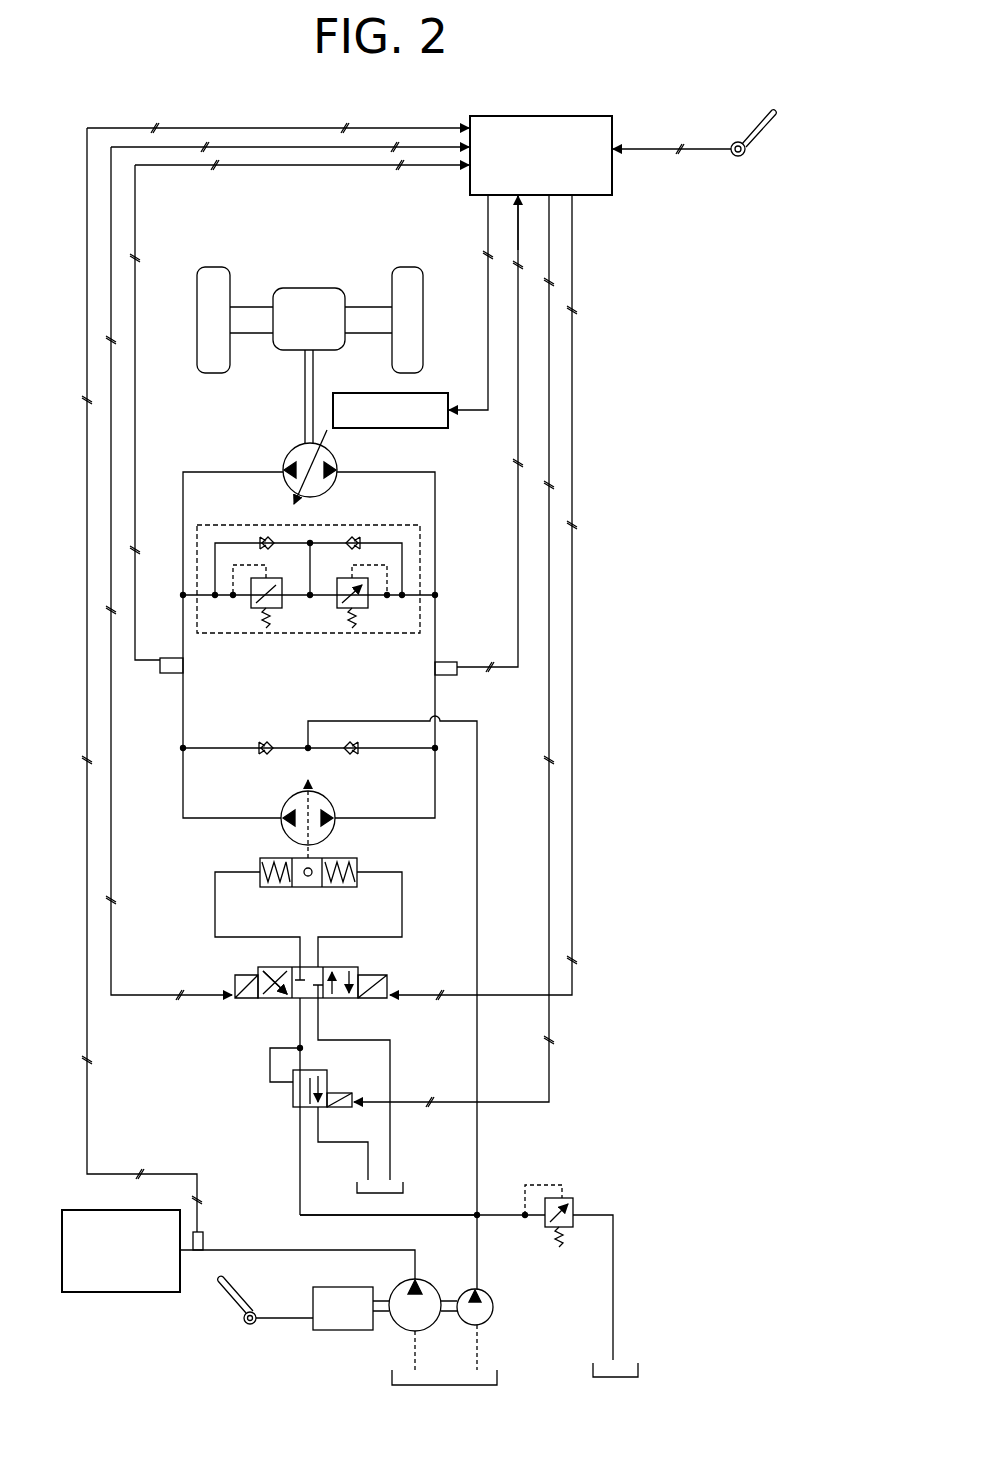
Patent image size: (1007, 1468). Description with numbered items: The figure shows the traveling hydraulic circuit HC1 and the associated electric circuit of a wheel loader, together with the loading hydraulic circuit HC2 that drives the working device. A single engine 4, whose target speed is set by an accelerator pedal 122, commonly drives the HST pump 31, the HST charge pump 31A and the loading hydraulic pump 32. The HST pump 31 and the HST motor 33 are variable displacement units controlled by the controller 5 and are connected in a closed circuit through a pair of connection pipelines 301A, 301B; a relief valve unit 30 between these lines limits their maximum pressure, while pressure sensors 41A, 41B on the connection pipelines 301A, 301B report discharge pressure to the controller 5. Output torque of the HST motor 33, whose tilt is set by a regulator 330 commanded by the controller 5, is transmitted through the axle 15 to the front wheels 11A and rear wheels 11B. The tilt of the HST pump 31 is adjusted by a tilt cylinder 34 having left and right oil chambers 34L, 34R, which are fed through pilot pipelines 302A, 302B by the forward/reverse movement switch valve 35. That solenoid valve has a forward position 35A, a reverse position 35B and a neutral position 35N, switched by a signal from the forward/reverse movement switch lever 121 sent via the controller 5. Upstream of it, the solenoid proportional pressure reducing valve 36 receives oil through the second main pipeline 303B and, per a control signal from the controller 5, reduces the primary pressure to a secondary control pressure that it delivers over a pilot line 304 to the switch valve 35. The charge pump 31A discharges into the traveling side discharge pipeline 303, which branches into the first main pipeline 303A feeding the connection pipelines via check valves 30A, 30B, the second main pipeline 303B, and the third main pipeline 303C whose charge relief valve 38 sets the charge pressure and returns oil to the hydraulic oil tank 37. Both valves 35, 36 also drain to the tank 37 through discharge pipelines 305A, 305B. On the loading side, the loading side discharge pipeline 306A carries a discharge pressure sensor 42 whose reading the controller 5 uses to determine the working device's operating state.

The controller 5 is at (612, 116).
The forward/reverse movement switch lever 121 is at (773, 108).
The front wheels 11A is at (215, 267).
The rear wheels 11B is at (410, 267).
The axle 15 is at (310, 288).
The regulator 330 is at (445, 428).
The HST motor 33 is at (337, 490).
The relief valve unit 30 is at (250, 522).
The connection pipeline 301A is at (183, 560).
The connection pipeline 301B is at (435, 555).
The forward side pressure sensor 41A is at (165, 675).
The forward side pressure sensor 41B is at (455, 675).
The check valve 30A is at (262, 755).
The check valve 30B is at (355, 755).
The HST pump 31 is at (283, 805).
The tilt cylinder 34 is at (318, 887).
The left oil chamber 34L is at (260, 862).
The right oil chamber 34R is at (357, 862).
The pilot pipeline 302A is at (215, 920).
The pilot pipeline 302B is at (402, 920).
The forward/reverse movement switch valve 35 is at (235, 1005).
The forward position 35A is at (345, 968).
The reverse position 35B is at (268, 968).
The neutral position 35N is at (300, 1000).
The pilot line 304 is at (300, 1020).
The solenoid proportional pressure reducing valve 36 is at (293, 1108).
The discharge pipeline 305A is at (390, 1130).
The discharge pipeline 305B is at (335, 1151).
The traveling side discharge pipeline 303 is at (470, 1218).
The first main pipeline 303A is at (475, 1150).
The second main pipeline 303B is at (300, 1160).
The third main pipeline 303C is at (507, 1259).
The hydraulic oil tank 37 is at (403, 1185).
The charge relief valve 38 is at (573, 1205).
The loading hydraulic pump 32 is at (437, 1288).
The HST charge pump 31A is at (494, 1305).
The engine 4 is at (325, 1330).
The accelerator pedal 122 is at (220, 1310).
The discharge pressure sensor 42 is at (203, 1235).
The loading side discharge pipeline 306A is at (262, 1250).
The traveling hydraulic circuit HC1 is at (615, 1010).
The loading hydraulic circuit HC2 is at (62, 1225).